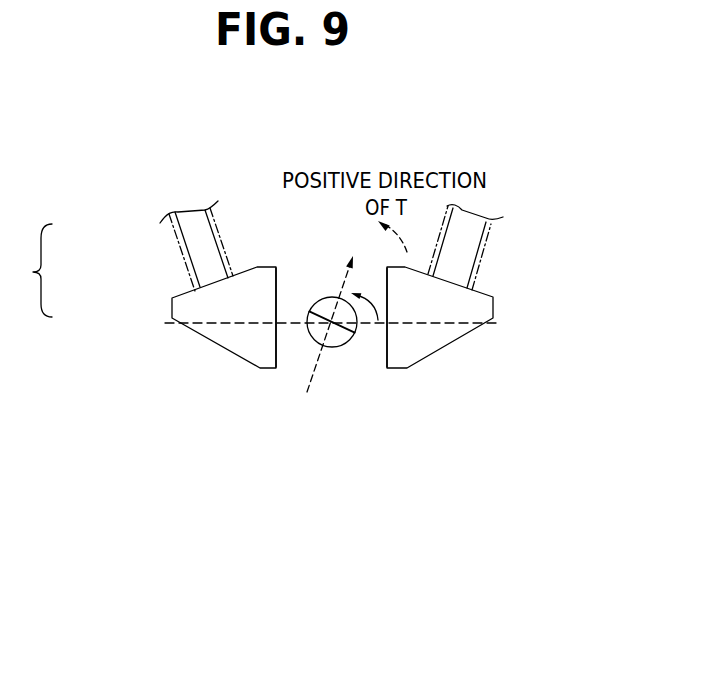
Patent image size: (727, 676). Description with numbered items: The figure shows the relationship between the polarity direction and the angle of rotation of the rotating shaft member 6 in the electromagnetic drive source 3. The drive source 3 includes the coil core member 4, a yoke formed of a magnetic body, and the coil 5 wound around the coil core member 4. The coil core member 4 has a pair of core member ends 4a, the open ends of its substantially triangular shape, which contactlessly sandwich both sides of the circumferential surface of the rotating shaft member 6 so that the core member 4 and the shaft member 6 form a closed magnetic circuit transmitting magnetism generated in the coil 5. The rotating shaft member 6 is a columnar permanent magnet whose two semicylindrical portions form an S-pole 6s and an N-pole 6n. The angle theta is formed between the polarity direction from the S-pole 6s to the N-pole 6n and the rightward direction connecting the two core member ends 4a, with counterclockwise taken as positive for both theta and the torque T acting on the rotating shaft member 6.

The electromagnetic drive source 3 is at (36, 270).
The coil core member 4 is at (180, 309).
The core member ends 4a is at (277, 343).
The coil 5 is at (178, 248).
The rotating shaft member 6 is at (328, 347).
The N-pole 6n is at (323, 298).
The S-pole 6s is at (348, 344).